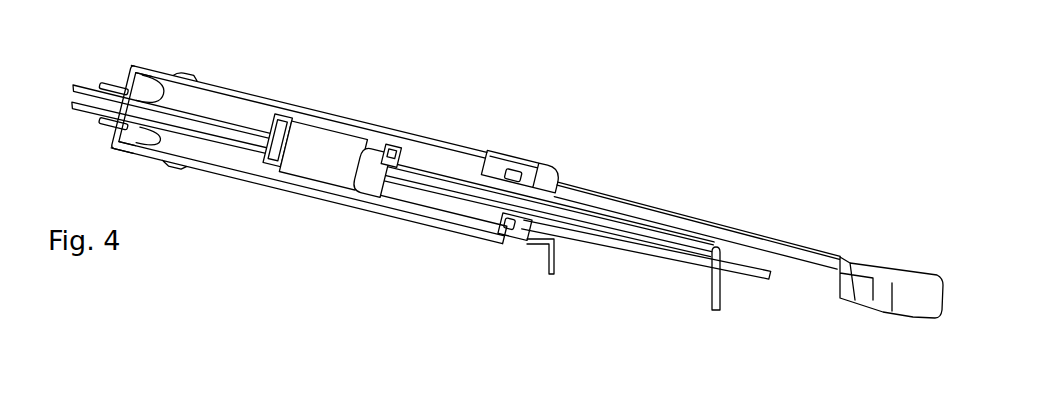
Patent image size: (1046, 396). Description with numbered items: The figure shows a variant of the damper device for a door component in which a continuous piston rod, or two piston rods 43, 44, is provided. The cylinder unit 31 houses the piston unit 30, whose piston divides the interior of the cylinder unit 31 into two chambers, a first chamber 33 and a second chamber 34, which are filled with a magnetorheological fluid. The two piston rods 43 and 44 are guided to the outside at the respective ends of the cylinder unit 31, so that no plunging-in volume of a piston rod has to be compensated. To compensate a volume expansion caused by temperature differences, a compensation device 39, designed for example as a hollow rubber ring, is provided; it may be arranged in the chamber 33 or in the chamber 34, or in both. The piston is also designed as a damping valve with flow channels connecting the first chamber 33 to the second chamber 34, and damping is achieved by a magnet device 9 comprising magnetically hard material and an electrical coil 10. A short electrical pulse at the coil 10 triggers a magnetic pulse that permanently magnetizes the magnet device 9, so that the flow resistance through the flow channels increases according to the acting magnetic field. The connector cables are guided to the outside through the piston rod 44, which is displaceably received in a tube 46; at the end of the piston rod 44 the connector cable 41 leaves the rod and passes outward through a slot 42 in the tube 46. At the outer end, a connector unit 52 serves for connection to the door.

The magnet device 9 is at (313, 168).
The coil 10 is at (373, 177).
The piston unit 30 is at (337, 100).
The cylinder unit 31 is at (415, 137).
The first chamber 33 is at (220, 158).
The second chamber 34 is at (460, 210).
The compensation device 39 is at (515, 232).
The connector cable 41 is at (722, 298).
The slot 42 is at (635, 250).
The piston rod 43 is at (87, 85).
The piston rod 44 is at (457, 180).
The tube 46 is at (755, 222).
The connector unit 52 is at (887, 263).